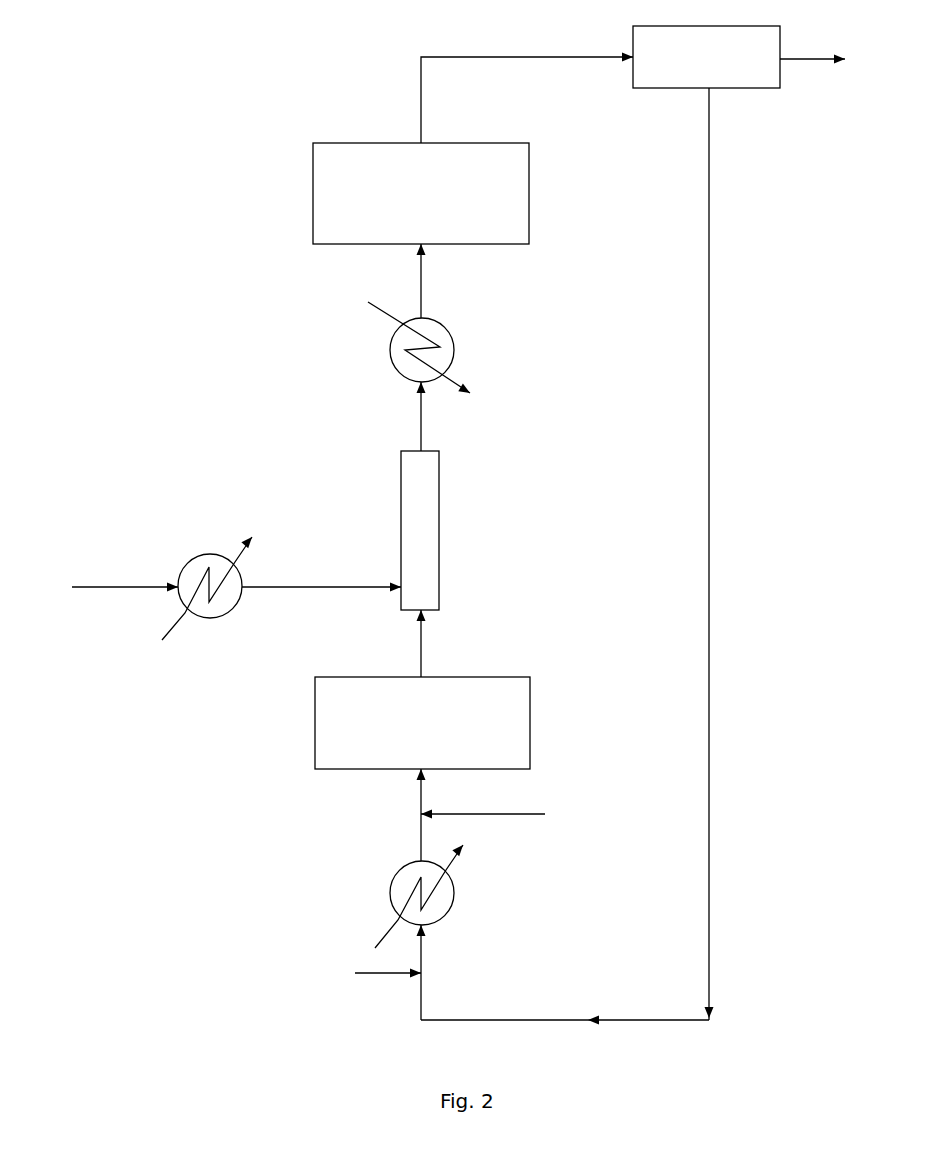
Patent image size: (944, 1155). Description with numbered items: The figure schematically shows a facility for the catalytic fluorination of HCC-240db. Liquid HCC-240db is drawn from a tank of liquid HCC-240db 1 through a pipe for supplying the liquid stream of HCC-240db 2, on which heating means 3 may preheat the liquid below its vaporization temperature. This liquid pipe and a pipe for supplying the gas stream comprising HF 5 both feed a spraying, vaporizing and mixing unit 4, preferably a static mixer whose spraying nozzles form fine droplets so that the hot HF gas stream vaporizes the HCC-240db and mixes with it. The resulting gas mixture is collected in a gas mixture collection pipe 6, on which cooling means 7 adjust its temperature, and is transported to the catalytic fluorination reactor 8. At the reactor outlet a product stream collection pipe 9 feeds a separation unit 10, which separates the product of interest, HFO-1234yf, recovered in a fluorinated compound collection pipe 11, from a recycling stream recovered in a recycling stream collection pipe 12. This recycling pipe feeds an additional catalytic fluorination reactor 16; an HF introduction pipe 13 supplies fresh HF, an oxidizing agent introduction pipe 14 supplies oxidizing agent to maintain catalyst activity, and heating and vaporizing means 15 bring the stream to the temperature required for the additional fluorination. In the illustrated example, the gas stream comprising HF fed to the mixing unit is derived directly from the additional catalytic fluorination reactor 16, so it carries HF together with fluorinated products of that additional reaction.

The tank of liquid HCC-240db 1 is at (112, 586).
The pipe for supplying the liquid stream of HCC-240db 2 is at (321, 577).
The heating means 3 is at (207, 585).
The spraying, vaporizing and mixing unit 4 is at (420, 530).
The pipe for supplying the gas stream comprising HF 5 is at (429, 643).
The gas mixture collection pipe 6 is at (413, 416).
The cooling means 7 is at (420, 347).
The catalytic fluorination reactor 8 is at (421, 230).
The product stream collection pipe 9 is at (527, 98).
The separation unit 10 is at (706, 57).
The fluorinated compound collection pipe 11 is at (812, 70).
The recycling stream collection pipe 12 is at (567, 556).
The HF introduction pipe 13 is at (390, 894).
The oxidizing agent introduction pipe 14 is at (483, 804).
The heating and vaporizing means 15 is at (411, 896).
The additional catalytic fluorination reactor 16 is at (422, 723).